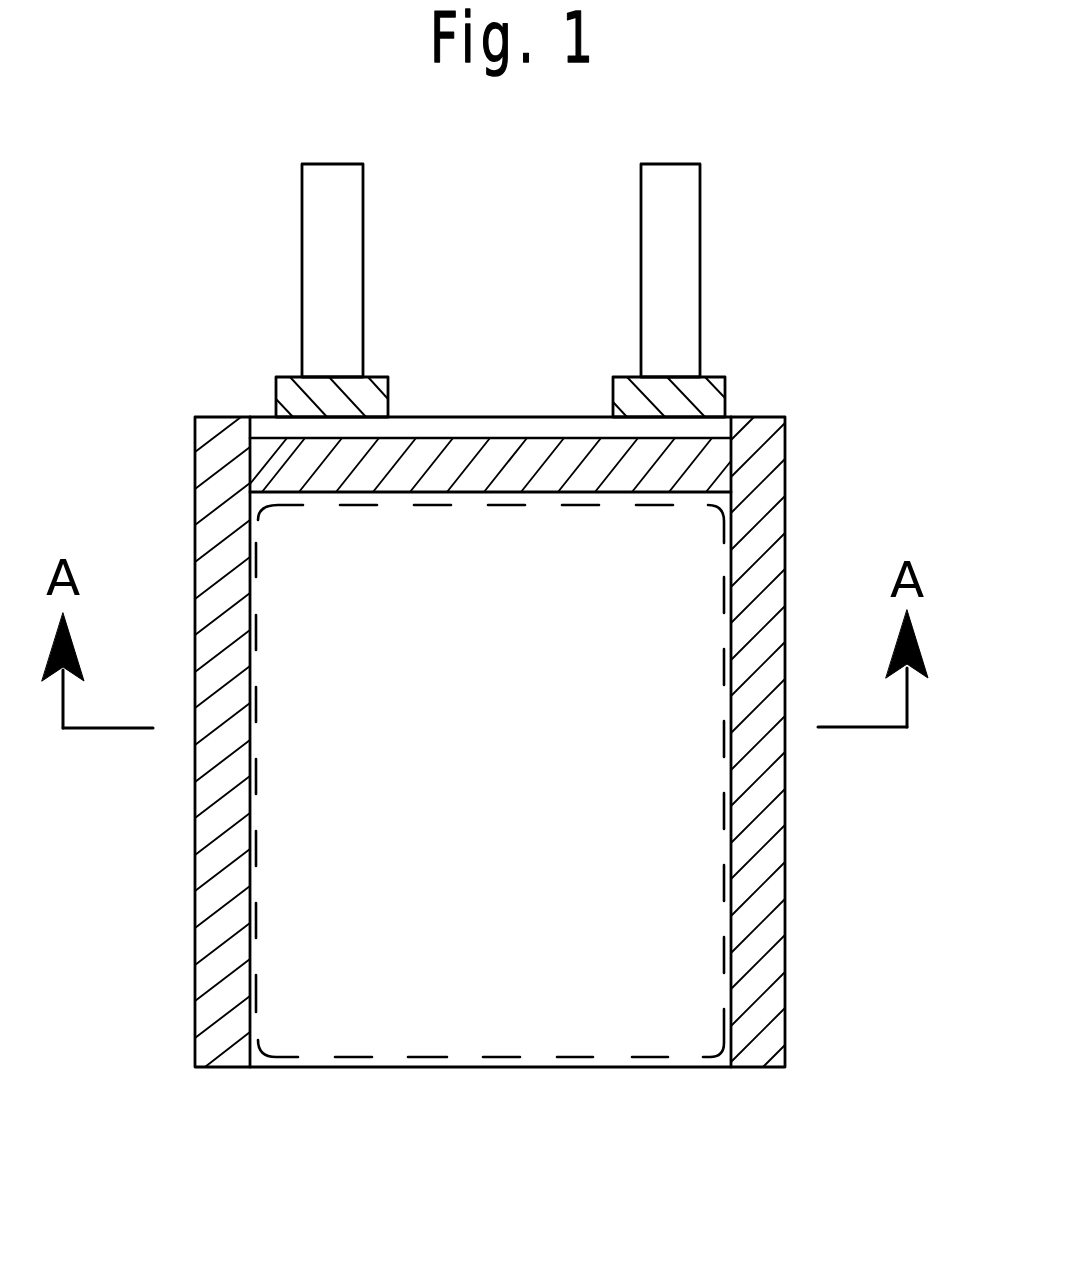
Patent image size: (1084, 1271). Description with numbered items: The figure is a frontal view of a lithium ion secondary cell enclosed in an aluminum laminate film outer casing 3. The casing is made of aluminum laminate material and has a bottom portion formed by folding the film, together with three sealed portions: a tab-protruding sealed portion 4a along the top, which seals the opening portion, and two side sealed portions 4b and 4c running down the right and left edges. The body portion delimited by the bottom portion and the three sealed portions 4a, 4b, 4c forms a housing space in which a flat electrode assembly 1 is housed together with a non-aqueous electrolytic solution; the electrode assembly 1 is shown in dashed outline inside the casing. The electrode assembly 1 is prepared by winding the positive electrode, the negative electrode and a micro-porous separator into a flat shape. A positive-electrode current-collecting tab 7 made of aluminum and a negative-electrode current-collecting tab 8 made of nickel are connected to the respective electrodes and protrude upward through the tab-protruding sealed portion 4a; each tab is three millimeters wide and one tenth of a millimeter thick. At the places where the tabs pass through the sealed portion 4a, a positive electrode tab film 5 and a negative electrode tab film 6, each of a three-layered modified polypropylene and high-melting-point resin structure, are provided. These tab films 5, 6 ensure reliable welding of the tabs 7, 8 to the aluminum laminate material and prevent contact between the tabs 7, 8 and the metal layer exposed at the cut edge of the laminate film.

The electrode assembly 1 is at (638, 957).
The film outer casing 3 is at (800, 444).
The tab-protruding sealed portion 4a is at (417, 457).
The side sealed portion 4b is at (797, 498).
The side sealed portion 4c is at (195, 557).
The positive electrode tab film 5 is at (288, 388).
The negative electrode tab film 6 is at (713, 382).
The positive-electrode current-collecting tab 7 is at (338, 243).
The negative-electrode current-collecting tab 8 is at (668, 252).